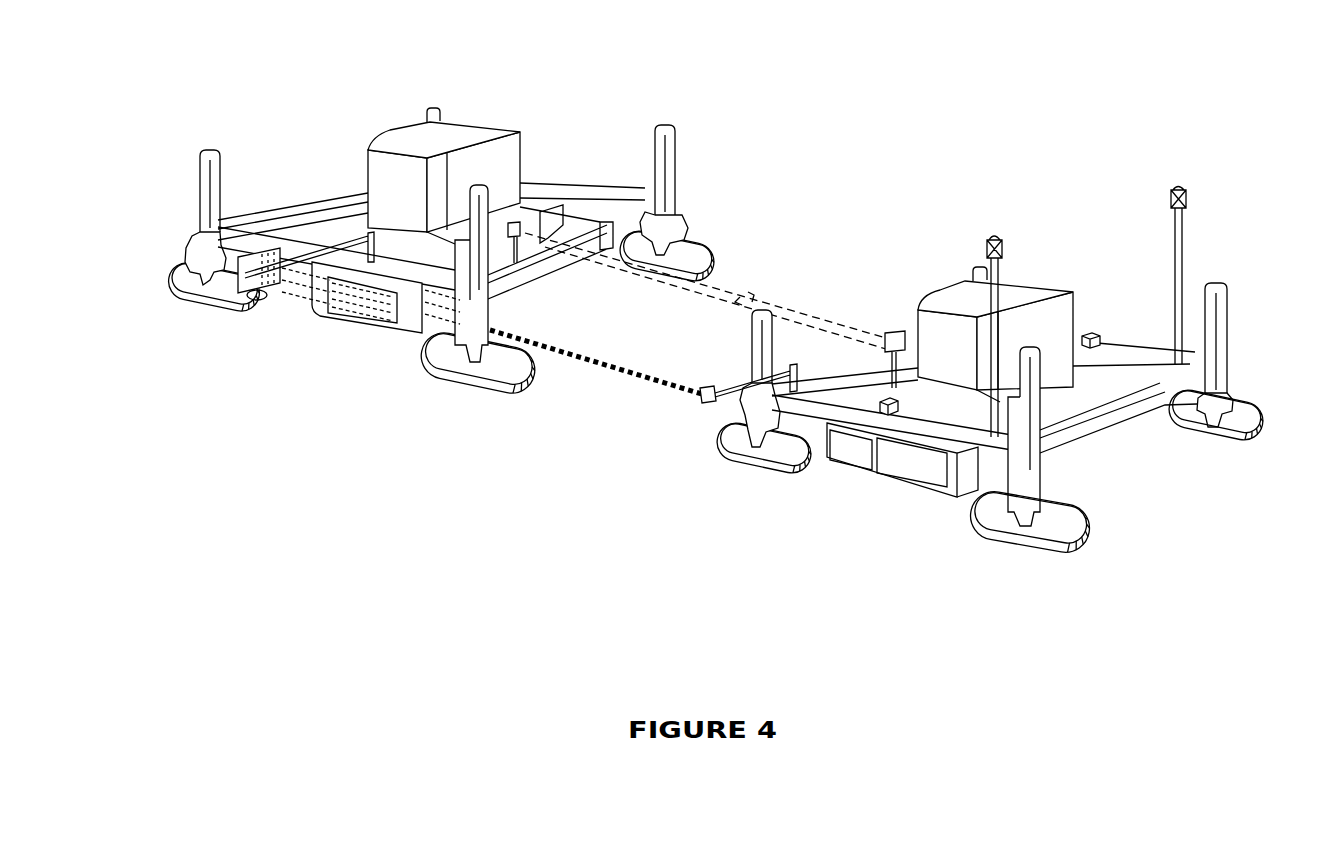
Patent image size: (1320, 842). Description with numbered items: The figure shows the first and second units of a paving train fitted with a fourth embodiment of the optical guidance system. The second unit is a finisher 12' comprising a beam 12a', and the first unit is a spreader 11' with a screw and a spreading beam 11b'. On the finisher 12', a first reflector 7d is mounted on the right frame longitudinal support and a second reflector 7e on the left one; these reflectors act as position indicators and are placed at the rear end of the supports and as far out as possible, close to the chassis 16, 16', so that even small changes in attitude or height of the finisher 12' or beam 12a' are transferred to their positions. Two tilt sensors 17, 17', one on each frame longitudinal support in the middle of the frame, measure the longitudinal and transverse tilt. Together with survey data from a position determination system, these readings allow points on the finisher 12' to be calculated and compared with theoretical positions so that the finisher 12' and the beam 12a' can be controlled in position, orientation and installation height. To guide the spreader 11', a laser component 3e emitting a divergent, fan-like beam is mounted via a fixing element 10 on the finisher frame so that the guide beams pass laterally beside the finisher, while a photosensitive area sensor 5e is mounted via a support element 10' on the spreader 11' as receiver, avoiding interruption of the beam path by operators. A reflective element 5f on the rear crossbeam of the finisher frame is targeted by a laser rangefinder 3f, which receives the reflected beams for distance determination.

The spreader 11' is at (441, 219).
The support element 10' is at (309, 213).
The reflective element 5f is at (522, 226).
The photosensitive area sensor 5e is at (254, 293).
The spreading beam 11b' is at (386, 329).
The fixing element 10 is at (747, 359).
The laser component 3e is at (703, 402).
The second reflector 7e is at (980, 240).
The laser rangefinder 3f is at (896, 333).
The finisher 12' is at (973, 333).
The first reflector 7d is at (1182, 190).
The tilt sensor 17 is at (1100, 304).
The chassis 16 is at (1204, 433).
The chassis 16' is at (1016, 535).
The tilt sensor 17' is at (805, 466).
The beam 12a' is at (902, 480).